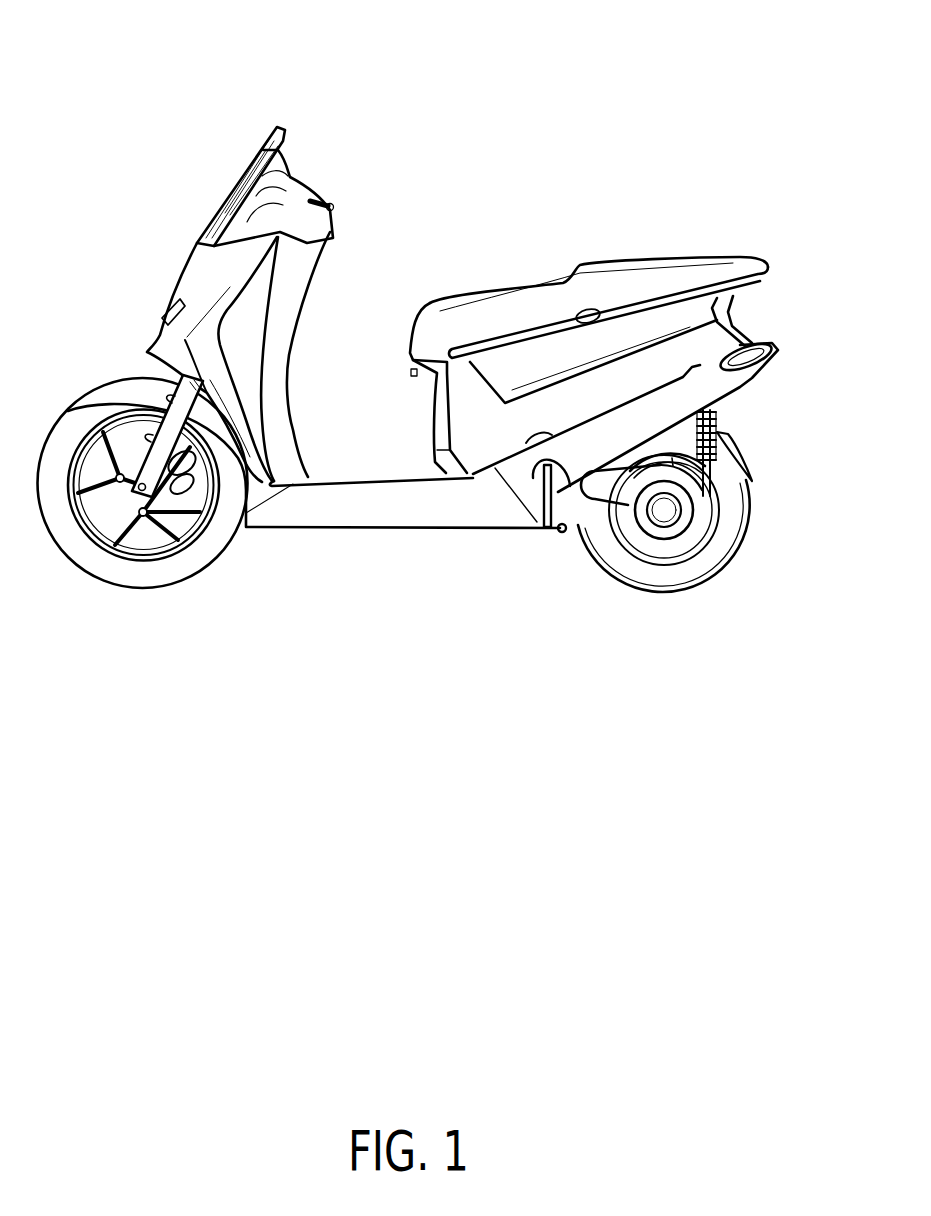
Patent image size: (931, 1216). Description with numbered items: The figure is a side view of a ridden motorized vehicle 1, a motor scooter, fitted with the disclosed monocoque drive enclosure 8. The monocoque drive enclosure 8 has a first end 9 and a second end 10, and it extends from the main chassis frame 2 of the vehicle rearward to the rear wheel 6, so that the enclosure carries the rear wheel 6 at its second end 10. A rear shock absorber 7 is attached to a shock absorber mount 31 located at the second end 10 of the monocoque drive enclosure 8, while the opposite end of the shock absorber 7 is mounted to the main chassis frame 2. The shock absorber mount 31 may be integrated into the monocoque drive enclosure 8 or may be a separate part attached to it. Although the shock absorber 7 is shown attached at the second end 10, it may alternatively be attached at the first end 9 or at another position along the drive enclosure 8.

The ridden motorized vehicle 1 is at (247, 112).
The main chassis frame 2 is at (550, 480).
The rear wheel 6 is at (750, 520).
The rear shock absorber 7 is at (710, 413).
The monocoque drive enclosure 8 is at (690, 533).
The first end 9 is at (582, 503).
The second end 10 is at (685, 516).
The shock absorber mount 31 is at (720, 497).